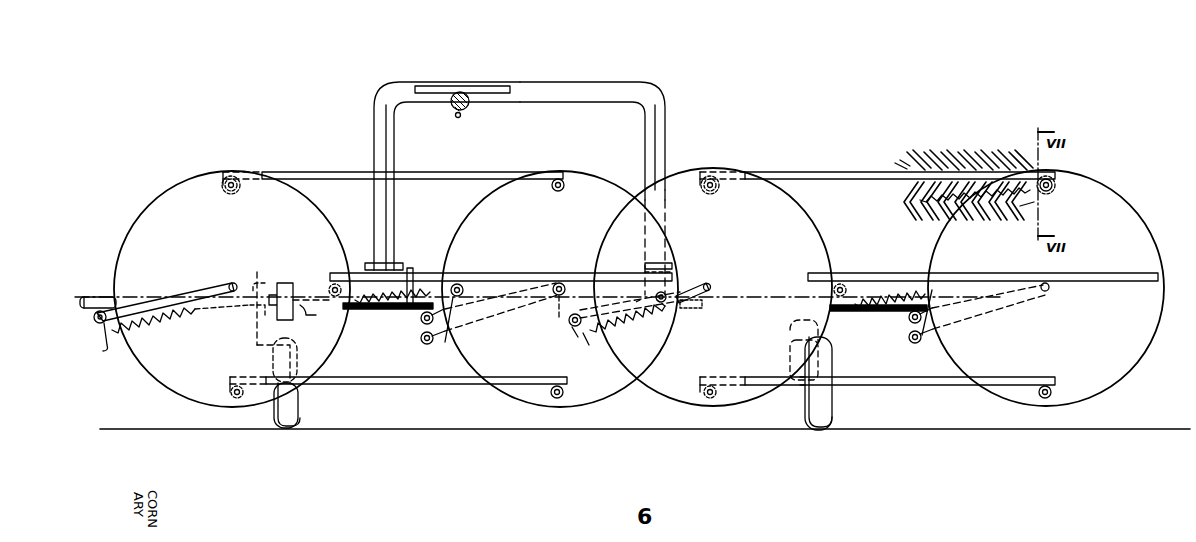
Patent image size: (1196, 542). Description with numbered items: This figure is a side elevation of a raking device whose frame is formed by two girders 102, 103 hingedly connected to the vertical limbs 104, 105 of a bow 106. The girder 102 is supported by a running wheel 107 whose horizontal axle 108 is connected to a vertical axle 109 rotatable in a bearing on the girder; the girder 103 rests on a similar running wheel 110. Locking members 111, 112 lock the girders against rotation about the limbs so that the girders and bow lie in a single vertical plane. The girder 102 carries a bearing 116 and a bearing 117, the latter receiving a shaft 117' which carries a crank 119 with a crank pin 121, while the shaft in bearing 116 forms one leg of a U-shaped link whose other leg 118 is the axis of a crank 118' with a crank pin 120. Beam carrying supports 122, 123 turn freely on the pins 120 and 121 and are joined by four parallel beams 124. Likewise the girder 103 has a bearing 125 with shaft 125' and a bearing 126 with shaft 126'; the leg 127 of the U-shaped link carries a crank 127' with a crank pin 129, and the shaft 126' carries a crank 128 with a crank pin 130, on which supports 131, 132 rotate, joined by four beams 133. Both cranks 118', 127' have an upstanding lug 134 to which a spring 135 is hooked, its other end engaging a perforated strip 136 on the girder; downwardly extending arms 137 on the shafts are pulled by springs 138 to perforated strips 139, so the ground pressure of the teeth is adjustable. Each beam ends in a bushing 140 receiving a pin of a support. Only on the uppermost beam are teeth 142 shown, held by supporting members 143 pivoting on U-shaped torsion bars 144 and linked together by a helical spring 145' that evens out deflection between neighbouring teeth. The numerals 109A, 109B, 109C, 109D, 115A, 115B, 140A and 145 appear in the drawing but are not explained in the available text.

The girder 102 is at (756, 286).
The girder 103 is at (317, 316).
The vertical limb 104 is at (664, 160).
The vertical limb 105 is at (372, 155).
The bow 106 is at (598, 96).
The running wheel 107 is at (832, 400).
The horizontal axle 108 is at (800, 388).
The vertical axle 109 is at (256, 268).
The bracket block 109A is at (287, 266).
The bracket arm 109B is at (264, 278).
The bracket arm 109C is at (250, 314).
The bracket leg 109D is at (260, 338).
The running wheel 110 is at (300, 410).
The locking member 111 is at (664, 258).
The locking member 112 is at (394, 253).
The top bar 115A is at (460, 84).
The pivot pin 115B is at (468, 107).
The bearing 116 is at (908, 318).
The bearing 117 is at (611, 310).
The shaft 117' is at (559, 335).
The leg of U-shaped link 118 is at (908, 332).
The crank 118' is at (988, 308).
The crank 119 is at (665, 305).
The crank pin 120 is at (1049, 290).
The crank pin 121 is at (710, 283).
The beam carrying support 122 is at (1046, 288).
The beam carrying support 123 is at (713, 287).
The beam 124 is at (826, 173).
The bearing 125 is at (409, 317).
The shaft 125' is at (406, 335).
The bearing 126 is at (89, 310).
The shaft 126' is at (84, 324).
The leg of U-shaped link 127 is at (415, 332).
The crank 127' is at (501, 308).
The crank 128 is at (196, 282).
The crank pin 129 is at (562, 278).
The crank pin 130 is at (228, 284).
The beam carrying support 131 is at (560, 289).
The beam carrying support 132 is at (232, 289).
The beam 133 is at (343, 173).
The upstanding lug 134 is at (458, 298).
The spring 135 is at (410, 266).
The strip 136 is at (358, 312).
The downwardly extending arm 137 is at (102, 350).
The spring 138 is at (164, 334).
The perforated strip 139 is at (700, 309).
The bushing 140 is at (704, 187).
The bearing housing 140A is at (716, 187).
The tooth 142 is at (913, 228).
The supporting member 143 is at (920, 192).
The U-shaped torsion bar 144 is at (930, 142).
The fin mount 145 is at (888, 160).
The helical spring 145' is at (1044, 210).